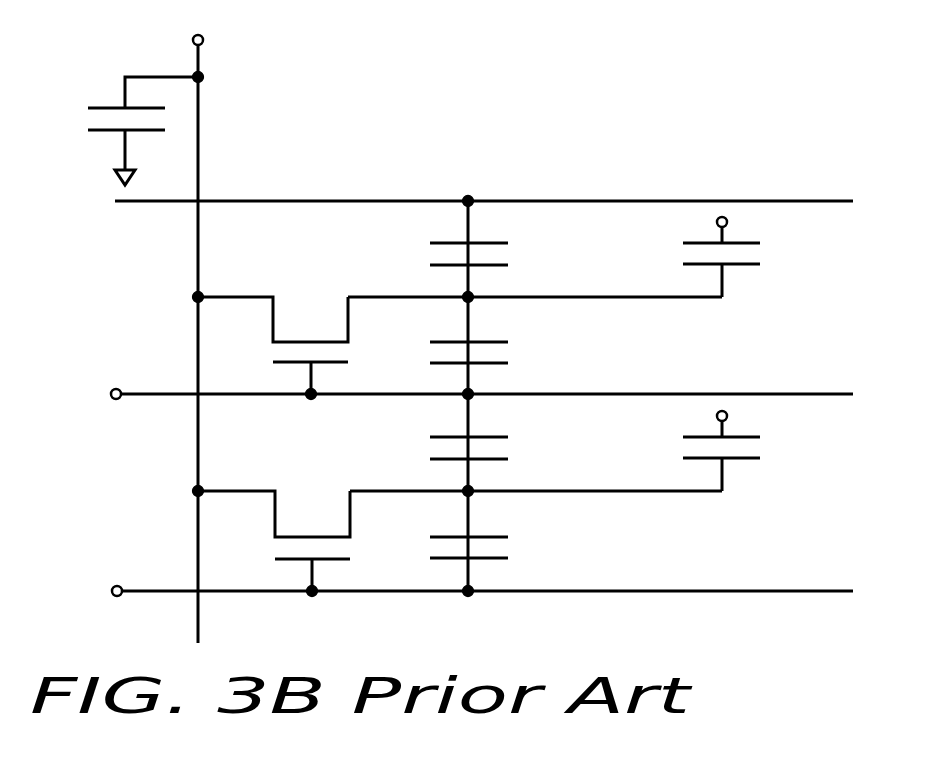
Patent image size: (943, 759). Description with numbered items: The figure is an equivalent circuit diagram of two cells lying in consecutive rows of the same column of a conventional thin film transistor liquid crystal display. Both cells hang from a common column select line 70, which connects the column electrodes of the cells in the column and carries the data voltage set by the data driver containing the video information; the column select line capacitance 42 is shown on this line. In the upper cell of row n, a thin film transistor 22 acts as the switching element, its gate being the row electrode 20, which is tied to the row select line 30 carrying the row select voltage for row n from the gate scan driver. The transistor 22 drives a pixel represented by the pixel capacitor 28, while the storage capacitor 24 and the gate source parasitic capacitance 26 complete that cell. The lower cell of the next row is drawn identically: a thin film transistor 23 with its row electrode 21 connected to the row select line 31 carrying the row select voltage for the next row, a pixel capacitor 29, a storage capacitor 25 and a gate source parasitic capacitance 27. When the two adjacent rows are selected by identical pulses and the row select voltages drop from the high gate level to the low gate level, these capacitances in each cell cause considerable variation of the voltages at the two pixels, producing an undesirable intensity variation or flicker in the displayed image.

The column select line 70 is at (198, 55).
The column select line capacitance 42 is at (104, 119).
The thin film transistor 22 is at (300, 327).
The thin film transistor of row n+1 23 is at (301, 526).
The row electrode 20 is at (313, 396).
The gate node of transistor 23 21 is at (314, 593).
The row select line 30 is at (133, 393).
The gate line terminal VG(n+1) 31 is at (133, 589).
The storage capacitor 24 is at (497, 258).
The gate source parasitic capacitance 26 is at (497, 352).
The storage capacitor Cs(n+1) 25 is at (497, 448).
The gate capacitance Cg(n+1) 27 is at (497, 547).
The pixel capacitor 28 is at (752, 256).
The pixel capacitor C(n+1) 29 is at (752, 449).